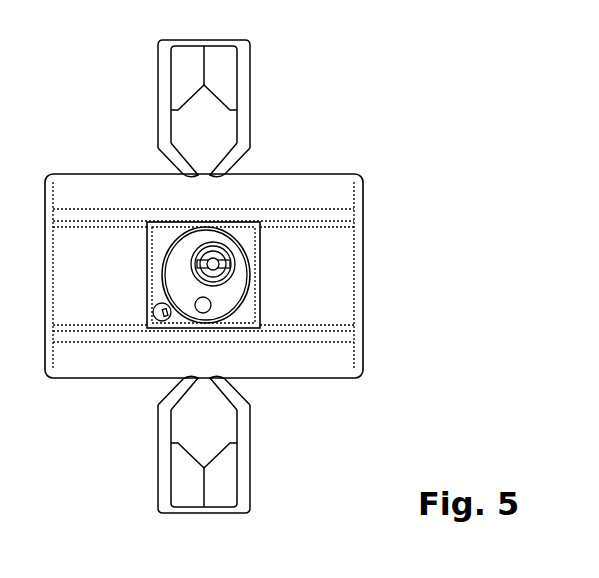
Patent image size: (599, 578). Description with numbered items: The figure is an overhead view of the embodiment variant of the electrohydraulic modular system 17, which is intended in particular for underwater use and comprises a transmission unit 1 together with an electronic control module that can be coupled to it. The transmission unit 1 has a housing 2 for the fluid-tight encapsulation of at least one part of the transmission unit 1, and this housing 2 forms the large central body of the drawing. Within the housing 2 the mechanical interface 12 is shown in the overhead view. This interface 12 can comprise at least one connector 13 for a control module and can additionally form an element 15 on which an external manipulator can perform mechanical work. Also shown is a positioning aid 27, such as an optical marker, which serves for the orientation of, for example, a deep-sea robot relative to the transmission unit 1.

The transmission unit 1 is at (380, 187).
The housing 2 is at (364, 295).
The interface 12 is at (166, 256).
The connector 13 is at (207, 312).
The element 15 is at (224, 252).
The electrohydraulic modular system 17 is at (338, 76).
The positioning aid 27 is at (153, 310).